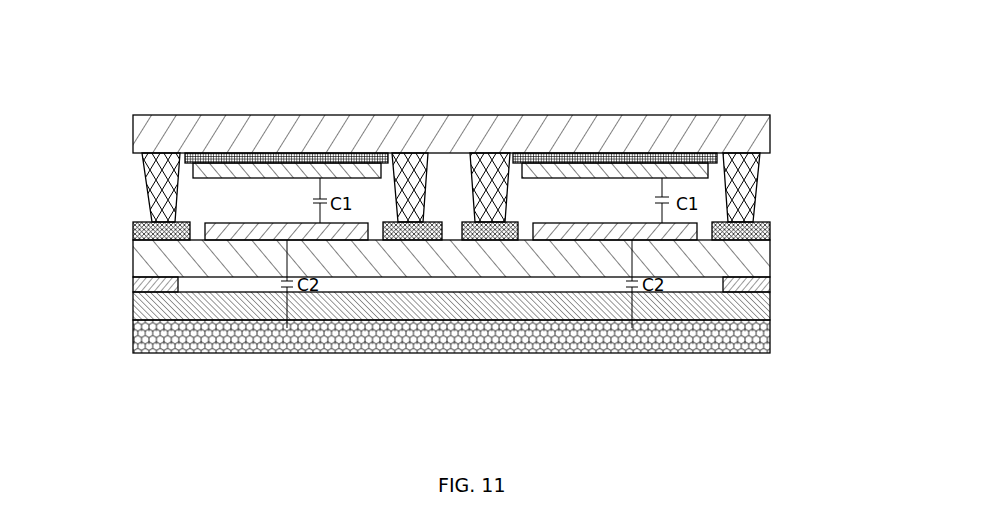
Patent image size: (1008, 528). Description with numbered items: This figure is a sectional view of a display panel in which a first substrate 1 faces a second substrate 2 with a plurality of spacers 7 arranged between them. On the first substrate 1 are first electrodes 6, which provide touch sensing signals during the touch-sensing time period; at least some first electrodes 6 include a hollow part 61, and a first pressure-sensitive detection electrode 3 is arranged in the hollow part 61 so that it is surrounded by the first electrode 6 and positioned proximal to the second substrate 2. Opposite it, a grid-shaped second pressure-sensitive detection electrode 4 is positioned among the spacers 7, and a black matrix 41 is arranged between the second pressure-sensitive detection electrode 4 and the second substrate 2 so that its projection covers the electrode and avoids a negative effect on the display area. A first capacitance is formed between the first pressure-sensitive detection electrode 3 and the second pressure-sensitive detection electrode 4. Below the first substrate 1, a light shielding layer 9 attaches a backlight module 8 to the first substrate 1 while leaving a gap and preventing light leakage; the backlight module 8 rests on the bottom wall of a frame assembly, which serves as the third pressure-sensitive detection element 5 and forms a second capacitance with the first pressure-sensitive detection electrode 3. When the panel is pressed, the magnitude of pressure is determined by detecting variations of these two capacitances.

The first substrate 1 is at (153, 262).
The second substrate 2 is at (153, 132).
The first pressure-sensitive detection electrode 3 is at (253, 165).
The second pressure-sensitive detection electrode 4 is at (467, 106).
The black matrix 41 is at (302, 153).
The third pressure-sensitive detection element 5 is at (735, 340).
The first electrode 6 is at (762, 233).
The hollow part 61 is at (198, 228).
The spacer 7 is at (745, 185).
The backlight module 8 is at (470, 307).
The light shielding layer 9 is at (137, 288).